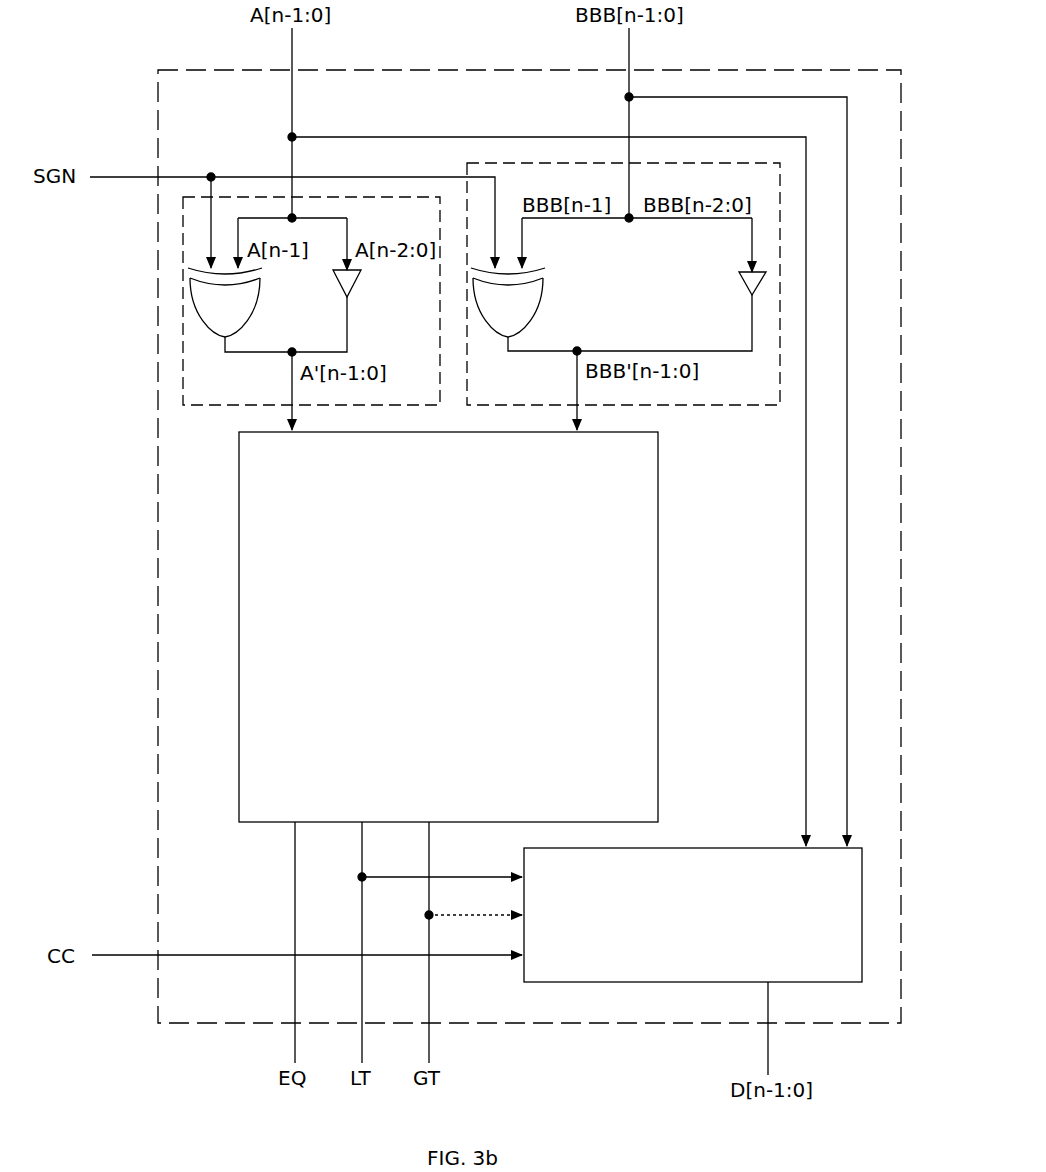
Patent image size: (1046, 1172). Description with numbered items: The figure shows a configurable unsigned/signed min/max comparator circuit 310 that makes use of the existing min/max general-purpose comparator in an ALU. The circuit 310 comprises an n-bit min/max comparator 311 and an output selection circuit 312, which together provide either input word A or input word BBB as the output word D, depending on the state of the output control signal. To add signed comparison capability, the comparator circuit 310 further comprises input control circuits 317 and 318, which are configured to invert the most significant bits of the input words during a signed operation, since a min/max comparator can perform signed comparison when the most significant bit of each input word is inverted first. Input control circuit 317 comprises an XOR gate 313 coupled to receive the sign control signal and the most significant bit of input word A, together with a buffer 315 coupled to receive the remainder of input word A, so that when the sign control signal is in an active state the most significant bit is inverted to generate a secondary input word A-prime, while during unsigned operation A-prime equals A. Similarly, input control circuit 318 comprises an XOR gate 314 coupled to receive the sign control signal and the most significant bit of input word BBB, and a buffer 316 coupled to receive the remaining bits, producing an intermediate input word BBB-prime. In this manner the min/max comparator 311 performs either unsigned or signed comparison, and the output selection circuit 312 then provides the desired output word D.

The configurable unsigned/signed min/max comparator circuit 310 is at (193, 70).
The n-bit min/max comparator 311 is at (448, 627).
The output selection circuit 312 is at (693, 915).
The XOR gate 313 is at (225, 302).
The XOR gate 314 is at (508, 302).
The buffer 315 is at (338, 285).
The buffer 316 is at (742, 292).
The input control circuit 317 is at (230, 405).
The input control circuit 318 is at (670, 405).